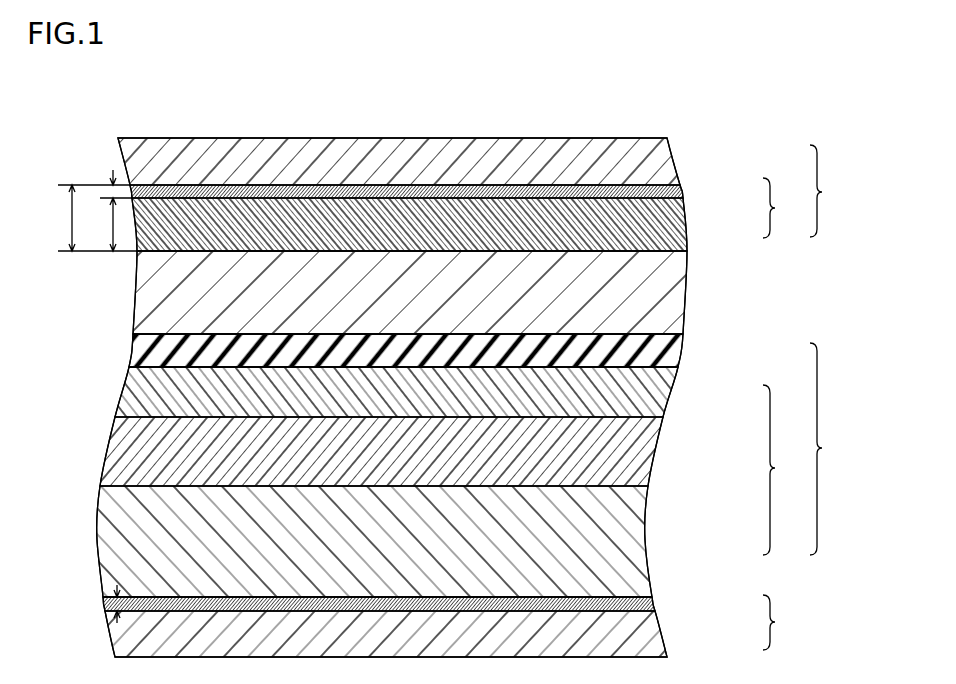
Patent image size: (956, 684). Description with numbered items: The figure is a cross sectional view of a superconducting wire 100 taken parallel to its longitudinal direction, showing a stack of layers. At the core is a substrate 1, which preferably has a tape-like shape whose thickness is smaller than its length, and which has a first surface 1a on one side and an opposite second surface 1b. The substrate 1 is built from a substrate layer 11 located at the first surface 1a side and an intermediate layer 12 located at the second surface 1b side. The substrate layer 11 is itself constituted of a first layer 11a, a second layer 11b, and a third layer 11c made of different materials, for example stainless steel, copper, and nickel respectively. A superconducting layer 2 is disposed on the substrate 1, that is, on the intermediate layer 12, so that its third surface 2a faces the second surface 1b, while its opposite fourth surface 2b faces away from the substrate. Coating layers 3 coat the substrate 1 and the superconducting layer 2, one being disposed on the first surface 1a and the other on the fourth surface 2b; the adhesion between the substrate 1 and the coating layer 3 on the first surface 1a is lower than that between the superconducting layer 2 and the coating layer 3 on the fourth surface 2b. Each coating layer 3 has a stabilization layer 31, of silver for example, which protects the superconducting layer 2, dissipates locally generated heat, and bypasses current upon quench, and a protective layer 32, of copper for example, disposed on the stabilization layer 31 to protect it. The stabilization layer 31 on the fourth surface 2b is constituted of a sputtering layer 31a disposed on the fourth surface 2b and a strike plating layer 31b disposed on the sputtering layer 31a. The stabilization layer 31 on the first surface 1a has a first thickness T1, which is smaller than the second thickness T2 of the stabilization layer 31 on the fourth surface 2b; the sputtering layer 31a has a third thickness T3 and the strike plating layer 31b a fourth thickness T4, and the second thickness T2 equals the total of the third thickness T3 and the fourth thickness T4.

The superconducting wire 100 is at (676, 109).
The substrate 1 is at (829, 449).
The substrate layer 11 is at (785, 470).
The first layer 11a is at (683, 544).
The second layer 11b is at (683, 452).
The third layer 11c is at (683, 392).
The intermediate layer 12 is at (680, 356).
The first surface 1a is at (165, 597).
The second surface 1b is at (163, 365).
The superconducting layer 2 is at (685, 290).
The third surface 2a is at (148, 332).
The fourth surface 2b is at (163, 252).
The coating layer 3 is at (805, 397).
The stabilization layer 31 is at (683, 604).
The sputtering layer 31a is at (686, 224).
The strike plating layer 31b is at (683, 189).
The protective layer 32 is at (683, 154).
The first thickness T1 is at (104, 605).
The second thickness T2 is at (88, 218).
The third thickness T3 is at (106, 224).
The fourth thickness T4 is at (108, 197).